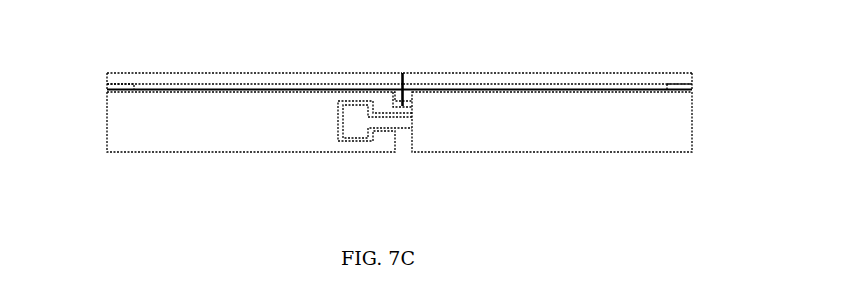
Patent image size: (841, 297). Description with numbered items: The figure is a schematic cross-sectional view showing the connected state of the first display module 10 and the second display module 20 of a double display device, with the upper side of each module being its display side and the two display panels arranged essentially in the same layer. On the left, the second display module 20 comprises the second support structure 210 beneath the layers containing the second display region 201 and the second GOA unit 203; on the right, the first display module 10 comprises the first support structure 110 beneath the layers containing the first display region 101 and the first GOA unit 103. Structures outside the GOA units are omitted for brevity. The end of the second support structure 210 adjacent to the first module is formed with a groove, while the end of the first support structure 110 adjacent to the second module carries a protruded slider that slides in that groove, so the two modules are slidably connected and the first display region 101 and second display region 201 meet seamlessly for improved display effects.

The first display module 10 is at (648, 158).
The second display module 20 is at (137, 157).
The first display region 101 is at (605, 85).
The first GOA unit 103 is at (673, 83).
The first support structure 110 is at (588, 142).
The second display region 201 is at (175, 89).
The second GOA unit 203 is at (110, 88).
The second support structure 210 is at (205, 138).